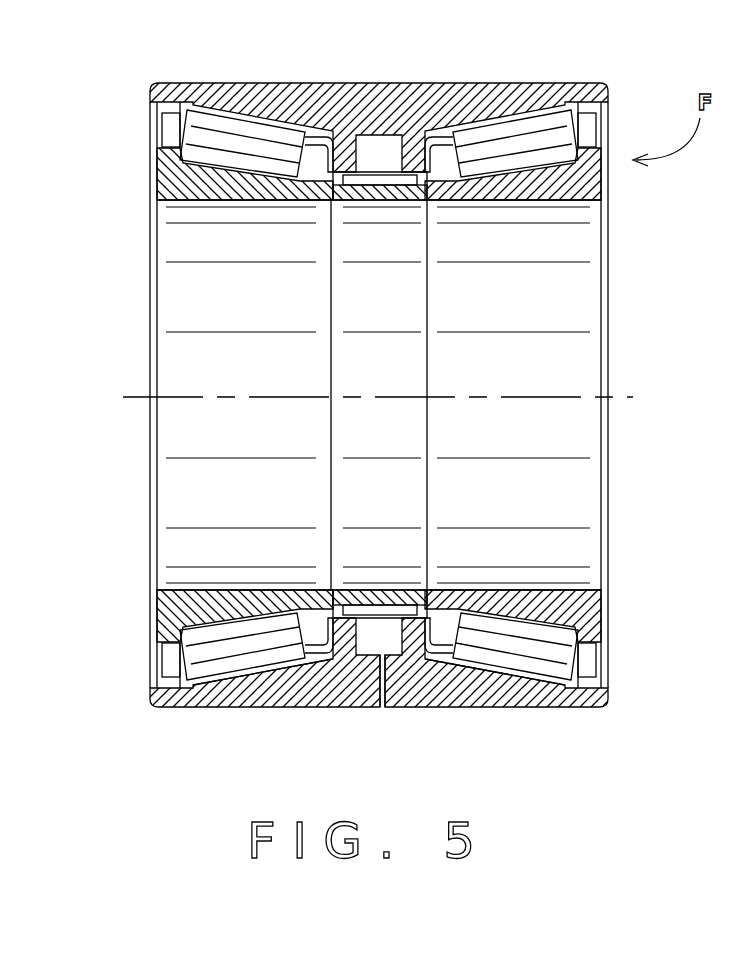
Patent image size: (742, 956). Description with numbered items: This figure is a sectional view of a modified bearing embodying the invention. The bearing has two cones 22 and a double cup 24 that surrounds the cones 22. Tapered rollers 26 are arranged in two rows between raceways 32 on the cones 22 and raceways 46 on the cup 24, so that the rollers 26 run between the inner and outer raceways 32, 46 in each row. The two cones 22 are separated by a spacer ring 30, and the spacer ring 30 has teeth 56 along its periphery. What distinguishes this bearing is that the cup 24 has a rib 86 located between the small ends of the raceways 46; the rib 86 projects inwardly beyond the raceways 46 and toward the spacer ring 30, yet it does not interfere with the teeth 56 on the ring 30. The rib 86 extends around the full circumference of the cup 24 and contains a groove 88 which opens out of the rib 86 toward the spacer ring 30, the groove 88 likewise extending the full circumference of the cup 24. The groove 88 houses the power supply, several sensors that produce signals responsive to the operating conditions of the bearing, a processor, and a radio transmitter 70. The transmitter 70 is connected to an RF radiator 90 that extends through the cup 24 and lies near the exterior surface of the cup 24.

The cones 22 is at (203, 186).
The double cup 24 is at (415, 83).
The tapered rollers 26 is at (240, 133).
The spacer ring 30 is at (366, 135).
The raceways on the cones 32 is at (240, 627).
The raceways on the cup 46 is at (242, 665).
The teeth 56 is at (361, 150).
The radio transmitter 70 is at (378, 632).
The rib 86 is at (345, 177).
The groove 88 is at (382, 150).
The RF radiator 90 is at (418, 708).